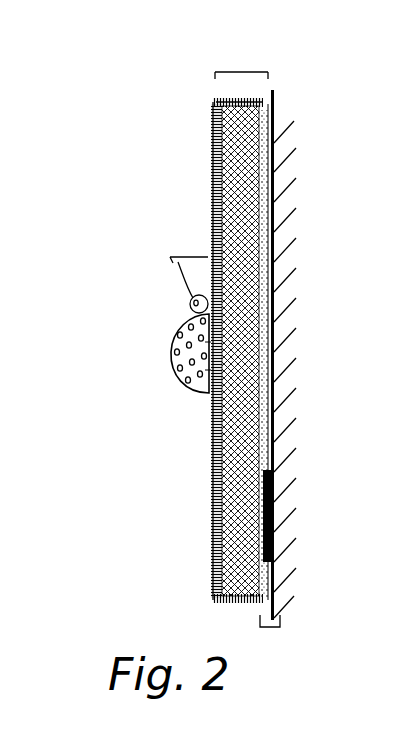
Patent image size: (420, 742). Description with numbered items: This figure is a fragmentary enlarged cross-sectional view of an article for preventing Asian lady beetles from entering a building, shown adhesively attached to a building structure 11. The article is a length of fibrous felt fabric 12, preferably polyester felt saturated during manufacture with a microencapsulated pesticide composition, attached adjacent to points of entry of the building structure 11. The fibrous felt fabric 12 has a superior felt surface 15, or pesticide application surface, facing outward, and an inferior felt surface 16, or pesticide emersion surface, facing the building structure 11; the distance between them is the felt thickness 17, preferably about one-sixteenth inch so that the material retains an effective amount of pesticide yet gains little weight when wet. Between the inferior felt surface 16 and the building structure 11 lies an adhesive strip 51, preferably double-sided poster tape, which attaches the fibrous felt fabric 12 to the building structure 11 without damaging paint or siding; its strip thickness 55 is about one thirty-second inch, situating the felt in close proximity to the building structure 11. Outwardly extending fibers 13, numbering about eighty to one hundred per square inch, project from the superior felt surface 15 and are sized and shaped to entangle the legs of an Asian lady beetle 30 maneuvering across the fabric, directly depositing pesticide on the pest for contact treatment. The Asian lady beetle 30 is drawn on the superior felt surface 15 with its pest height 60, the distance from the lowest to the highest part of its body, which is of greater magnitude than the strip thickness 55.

The building structure 11 is at (278, 120).
The fibrous felt fabric 12 is at (140, 152).
The outwardly extending fibers 13 is at (217, 128).
The superior felt surface 15 is at (212, 455).
The inferior felt surface 16 is at (262, 318).
The felt thickness 17 is at (240, 72).
The Asian lady beetle 30 is at (172, 348).
The adhesive strip 51 is at (270, 185).
The strip thickness 55 is at (283, 630).
The pest height 60 is at (190, 255).